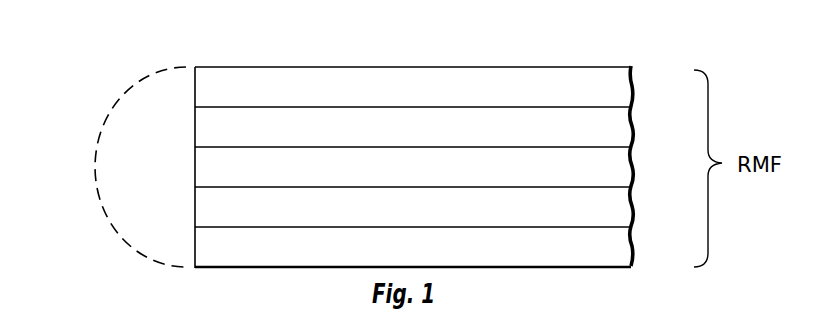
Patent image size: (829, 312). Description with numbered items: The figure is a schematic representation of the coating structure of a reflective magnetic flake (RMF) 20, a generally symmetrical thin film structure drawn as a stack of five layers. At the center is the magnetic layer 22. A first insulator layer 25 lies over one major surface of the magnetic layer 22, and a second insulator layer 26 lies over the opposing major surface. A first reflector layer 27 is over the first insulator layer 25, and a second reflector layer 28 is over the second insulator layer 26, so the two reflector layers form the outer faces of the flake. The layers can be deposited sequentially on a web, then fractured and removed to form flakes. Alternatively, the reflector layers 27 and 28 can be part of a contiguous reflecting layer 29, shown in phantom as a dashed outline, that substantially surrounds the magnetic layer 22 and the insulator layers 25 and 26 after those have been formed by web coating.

The reflective magnetic flake 20 is at (214, 52).
The first reflector layer 27 is at (611, 93).
The first insulator layer 25 is at (611, 133).
The magnetic layer 22 is at (611, 173).
The second insulator layer 26 is at (611, 211).
The second reflector layer 28 is at (611, 251).
The contiguous reflecting layer 29 is at (96, 163).